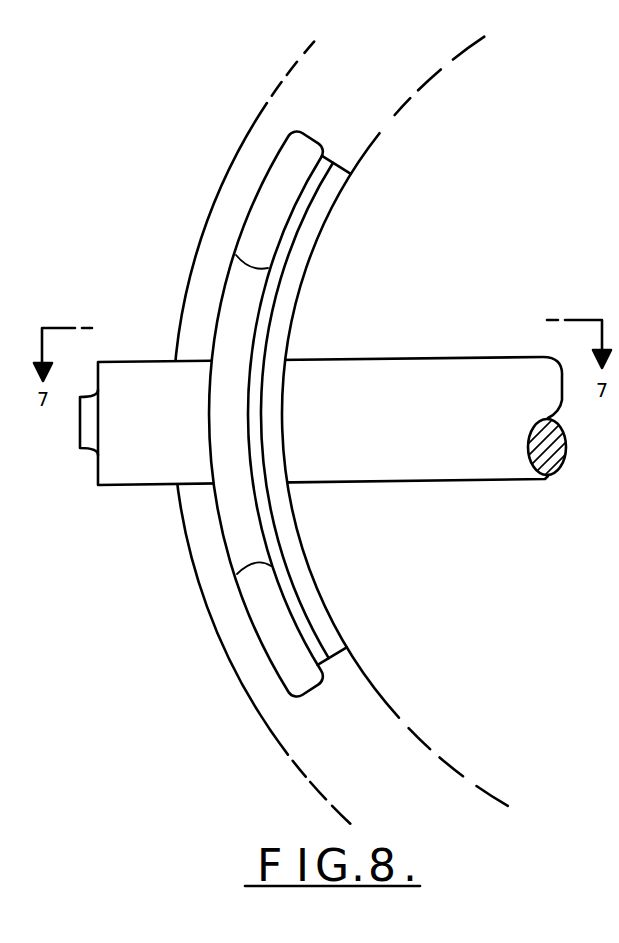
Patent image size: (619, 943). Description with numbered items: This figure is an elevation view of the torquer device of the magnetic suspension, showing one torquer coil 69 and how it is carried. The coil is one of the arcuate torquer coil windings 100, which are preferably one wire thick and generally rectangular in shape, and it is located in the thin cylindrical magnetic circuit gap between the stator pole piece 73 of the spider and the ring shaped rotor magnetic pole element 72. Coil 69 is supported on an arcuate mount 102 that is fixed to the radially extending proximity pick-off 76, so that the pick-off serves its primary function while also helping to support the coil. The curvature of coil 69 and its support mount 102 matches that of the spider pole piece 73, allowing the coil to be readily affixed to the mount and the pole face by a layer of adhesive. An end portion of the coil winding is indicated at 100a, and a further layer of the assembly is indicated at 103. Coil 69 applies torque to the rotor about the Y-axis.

The torquer coil 69 is at (210, 324).
The magnetic pole element 72 is at (249, 144).
The stator pole piece 73 is at (381, 128).
The proximity pick-off 76 is at (478, 356).
The torquer coil winding 100 is at (260, 218).
The band end portion 100a is at (267, 627).
The arcuate mount 102 is at (283, 328).
The friction layer 103 is at (300, 218).